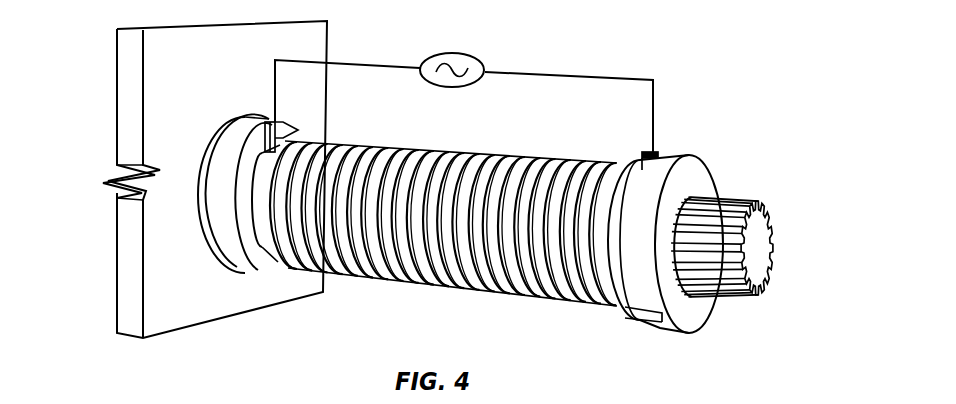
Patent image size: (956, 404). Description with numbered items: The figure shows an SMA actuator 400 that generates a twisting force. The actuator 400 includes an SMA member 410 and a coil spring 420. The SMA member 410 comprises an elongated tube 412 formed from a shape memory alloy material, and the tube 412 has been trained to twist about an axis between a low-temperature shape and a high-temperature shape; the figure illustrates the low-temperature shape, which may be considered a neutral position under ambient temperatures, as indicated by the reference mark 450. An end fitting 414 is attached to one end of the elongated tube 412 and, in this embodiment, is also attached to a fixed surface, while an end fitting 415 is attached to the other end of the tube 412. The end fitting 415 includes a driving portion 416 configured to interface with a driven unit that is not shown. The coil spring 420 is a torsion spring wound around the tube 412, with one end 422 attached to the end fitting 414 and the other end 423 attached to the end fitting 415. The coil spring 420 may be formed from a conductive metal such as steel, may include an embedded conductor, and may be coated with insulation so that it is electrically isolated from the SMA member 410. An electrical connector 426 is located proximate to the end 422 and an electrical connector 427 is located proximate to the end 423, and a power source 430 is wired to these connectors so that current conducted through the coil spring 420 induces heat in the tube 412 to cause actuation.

The SMA actuator 400 is at (665, 27).
The SMA member 410 is at (785, 352).
The elongated tube 412 is at (255, 243).
The end fitting 414 is at (217, 253).
The end fitting 415 is at (707, 175).
The driving portion 416 is at (725, 287).
The coil spring 420 is at (452, 153).
The end 422 is at (267, 107).
The end 423 is at (667, 142).
The electrical connector 426 is at (287, 123).
The electrical connector 427 is at (642, 156).
The power source 430 is at (465, 53).
The reference mark 450 is at (652, 322).